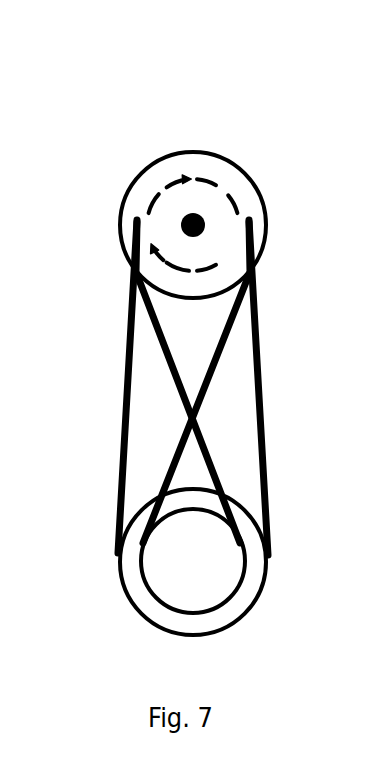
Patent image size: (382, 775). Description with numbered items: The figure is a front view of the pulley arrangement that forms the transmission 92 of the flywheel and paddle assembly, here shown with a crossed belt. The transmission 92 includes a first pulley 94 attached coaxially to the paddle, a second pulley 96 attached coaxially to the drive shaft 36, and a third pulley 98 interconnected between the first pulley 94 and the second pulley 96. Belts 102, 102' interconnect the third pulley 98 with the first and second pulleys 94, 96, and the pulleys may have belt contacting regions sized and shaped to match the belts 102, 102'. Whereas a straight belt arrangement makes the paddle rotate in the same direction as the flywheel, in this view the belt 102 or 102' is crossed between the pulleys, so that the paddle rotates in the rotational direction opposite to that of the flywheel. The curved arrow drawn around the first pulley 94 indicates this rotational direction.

The transmission 92 is at (142, 83).
The drive shaft 36 is at (192, 212).
The first pulley 94 is at (163, 176).
The second pulley 96 is at (258, 177).
The third pulley 98 is at (260, 597).
The belt 102 is at (193, 382).
The belt 102' is at (236, 387).